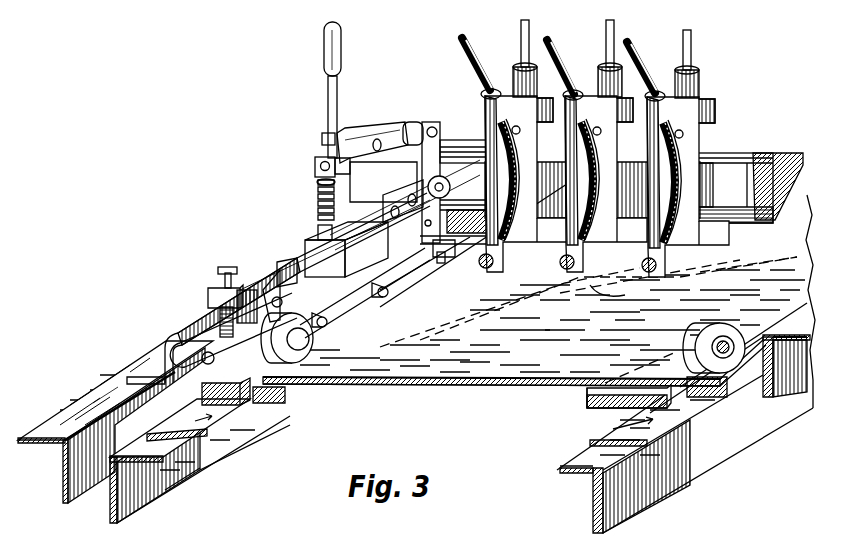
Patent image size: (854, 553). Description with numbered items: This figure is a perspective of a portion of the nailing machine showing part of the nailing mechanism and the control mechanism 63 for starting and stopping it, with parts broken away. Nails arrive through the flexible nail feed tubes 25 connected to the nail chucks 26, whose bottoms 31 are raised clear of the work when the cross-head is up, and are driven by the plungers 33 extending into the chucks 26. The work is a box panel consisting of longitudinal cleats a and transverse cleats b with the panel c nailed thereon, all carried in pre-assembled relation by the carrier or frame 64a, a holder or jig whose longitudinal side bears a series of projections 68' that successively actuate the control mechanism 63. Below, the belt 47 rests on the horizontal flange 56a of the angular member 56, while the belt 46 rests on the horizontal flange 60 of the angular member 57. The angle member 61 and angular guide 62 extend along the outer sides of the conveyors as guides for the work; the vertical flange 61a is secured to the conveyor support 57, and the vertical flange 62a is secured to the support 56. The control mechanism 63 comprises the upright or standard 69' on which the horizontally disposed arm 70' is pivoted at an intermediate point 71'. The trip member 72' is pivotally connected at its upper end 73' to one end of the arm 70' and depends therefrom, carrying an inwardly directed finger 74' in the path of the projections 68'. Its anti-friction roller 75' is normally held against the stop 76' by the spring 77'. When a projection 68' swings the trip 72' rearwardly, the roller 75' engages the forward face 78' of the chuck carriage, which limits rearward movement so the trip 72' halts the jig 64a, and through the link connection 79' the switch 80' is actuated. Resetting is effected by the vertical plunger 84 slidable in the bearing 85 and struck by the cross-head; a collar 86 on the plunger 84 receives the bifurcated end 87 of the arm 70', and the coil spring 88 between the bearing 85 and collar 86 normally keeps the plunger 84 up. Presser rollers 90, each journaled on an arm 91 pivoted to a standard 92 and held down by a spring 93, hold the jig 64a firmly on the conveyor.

The vertical plunger 84 is at (328, 88).
The control mechanism 63 is at (359, 107).
The bifurcated end 87 is at (338, 142).
The collar 86 is at (316, 160).
The coil spring 88 is at (318, 185).
The upright or standard 69′ is at (318, 203).
The bearing 85 is at (318, 236).
The horizontally disposed arm 70′ is at (368, 130).
The intermediate point 71′ is at (382, 140).
The upper end 73′ is at (434, 128).
The trip member 72′ is at (442, 135).
The stop 76′ is at (418, 192).
The anti-friction roller 75′ is at (452, 190).
The flexible nail feed tube 25 is at (470, 54).
The plunger 33 is at (529, 26).
The nail chuck 26 is at (604, 186).
The forward face 78′ is at (740, 197).
The transverse cleat b is at (743, 262).
The bottom 31 is at (607, 295).
The switch 80′ is at (262, 263).
The spring 93 is at (206, 300).
The arm 91 is at (228, 347).
The standard 92 is at (172, 336).
The presser roller 90 is at (318, 352).
The link connection 79′ is at (322, 300).
The spring 77′ is at (385, 300).
The projection 68′ is at (390, 292).
The inwardly directed finger 74′ is at (447, 262).
The vertical flange 61a is at (93, 403).
The angle member 61 is at (63, 481).
The angular member 57 is at (112, 509).
The horizontal flange 60 is at (180, 470).
The belt 46 is at (207, 422).
The carrier or frame 64a is at (237, 407).
The longitudinal cleat a is at (293, 418).
The panel c is at (418, 380).
The belt 47 is at (616, 426).
The horizontal flange 56a is at (557, 468).
The angular member 56 is at (635, 500).
The angular guide 62 is at (762, 400).
The vertical flange 62a is at (807, 380).